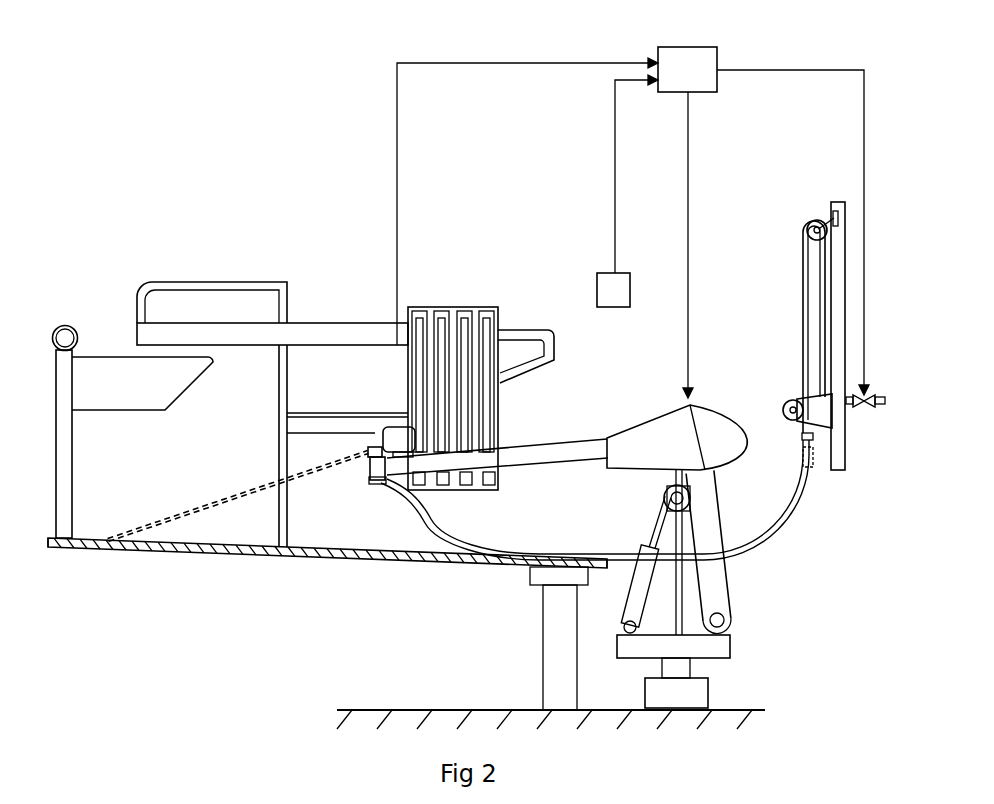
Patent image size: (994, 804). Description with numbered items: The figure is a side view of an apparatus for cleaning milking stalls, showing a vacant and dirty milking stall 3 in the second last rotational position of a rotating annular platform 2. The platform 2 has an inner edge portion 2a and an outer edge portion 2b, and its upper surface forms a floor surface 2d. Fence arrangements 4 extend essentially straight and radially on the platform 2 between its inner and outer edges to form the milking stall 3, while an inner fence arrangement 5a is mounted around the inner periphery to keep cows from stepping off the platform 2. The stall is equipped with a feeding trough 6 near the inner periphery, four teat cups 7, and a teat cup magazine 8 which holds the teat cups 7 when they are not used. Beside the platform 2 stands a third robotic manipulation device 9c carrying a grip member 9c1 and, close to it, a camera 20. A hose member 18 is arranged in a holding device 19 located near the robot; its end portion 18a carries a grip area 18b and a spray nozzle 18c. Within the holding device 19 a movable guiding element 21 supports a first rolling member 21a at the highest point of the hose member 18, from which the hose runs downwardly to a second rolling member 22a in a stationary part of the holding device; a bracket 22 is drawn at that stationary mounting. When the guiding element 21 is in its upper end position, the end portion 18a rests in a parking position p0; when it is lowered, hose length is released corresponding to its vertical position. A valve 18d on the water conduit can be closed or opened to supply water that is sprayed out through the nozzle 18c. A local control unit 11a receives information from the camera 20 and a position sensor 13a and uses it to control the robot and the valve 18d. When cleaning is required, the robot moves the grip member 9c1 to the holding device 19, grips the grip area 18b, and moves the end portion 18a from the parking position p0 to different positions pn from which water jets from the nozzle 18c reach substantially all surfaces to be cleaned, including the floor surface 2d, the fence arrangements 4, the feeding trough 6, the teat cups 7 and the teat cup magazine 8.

The platform 2 is at (213, 548).
The inner edge portion 2a is at (50, 540).
The outer edge portion 2b is at (607, 562).
The floor surface 2d is at (100, 540).
The milking stall 3 is at (225, 481).
The fence arrangement 4 is at (318, 332).
The inner fence arrangement 5a is at (67, 327).
The feeding trough 6 is at (147, 383).
The teat cup 7 is at (500, 473).
The teat cup magazine 8 is at (492, 355).
The third robotic manipulation device 9c is at (723, 560).
The grip member 9c1 is at (370, 467).
The local control unit 11a is at (690, 62).
The position sensor 13a is at (615, 290).
The hose member 18 is at (773, 513).
The end portion 18a is at (364, 438).
The grip area 18b is at (377, 477).
The spray nozzle 18c is at (368, 453).
The valve 18d is at (868, 395).
The holding device 19 is at (835, 275).
The camera 20 is at (403, 433).
The guiding element 21 is at (833, 207).
The first rolling member 21a is at (812, 228).
The bracket 22 is at (813, 412).
The second rolling member 22a is at (793, 400).
The spraying positions pn is at (368, 467).
The parking position p0 is at (800, 442).